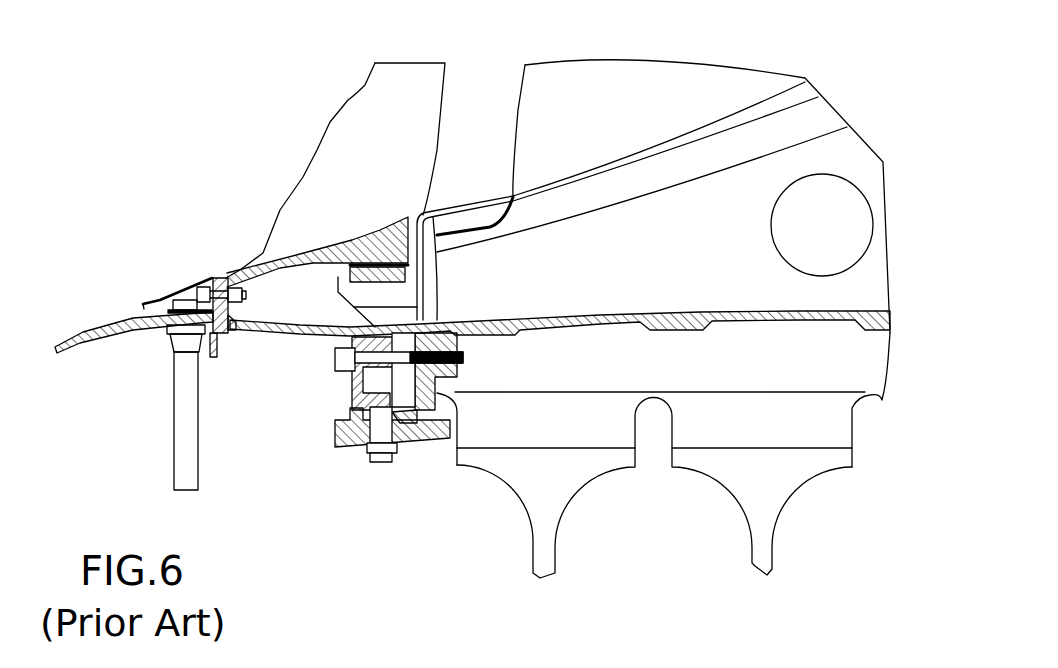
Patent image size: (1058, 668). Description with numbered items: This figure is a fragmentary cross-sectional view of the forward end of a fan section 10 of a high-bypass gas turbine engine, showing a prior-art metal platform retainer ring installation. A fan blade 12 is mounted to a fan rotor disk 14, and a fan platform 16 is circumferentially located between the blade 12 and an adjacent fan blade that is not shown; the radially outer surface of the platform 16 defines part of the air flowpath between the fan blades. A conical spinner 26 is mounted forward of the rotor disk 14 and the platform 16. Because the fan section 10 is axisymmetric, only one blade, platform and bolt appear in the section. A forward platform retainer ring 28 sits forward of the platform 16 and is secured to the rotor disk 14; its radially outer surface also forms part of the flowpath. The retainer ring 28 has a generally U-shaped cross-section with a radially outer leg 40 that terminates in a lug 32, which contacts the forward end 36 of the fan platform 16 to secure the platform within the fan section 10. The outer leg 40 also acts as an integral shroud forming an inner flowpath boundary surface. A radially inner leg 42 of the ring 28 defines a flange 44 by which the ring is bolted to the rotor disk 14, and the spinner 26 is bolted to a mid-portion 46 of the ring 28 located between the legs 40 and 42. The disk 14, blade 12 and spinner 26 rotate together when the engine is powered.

The fan section 10 is at (192, 106).
The fan blade 12 is at (647, 82).
The fan rotor disk 14 is at (797, 468).
The fan platform 16 is at (843, 153).
The conical spinner 26 is at (100, 329).
The forward platform retainer ring 28 is at (250, 243).
The lug 32 is at (391, 226).
The forward end 36 is at (377, 264).
The radially outer leg 40 is at (270, 268).
The radially inner leg 42 is at (303, 333).
The flange 44 is at (362, 389).
The mid-portion 46 is at (221, 276).